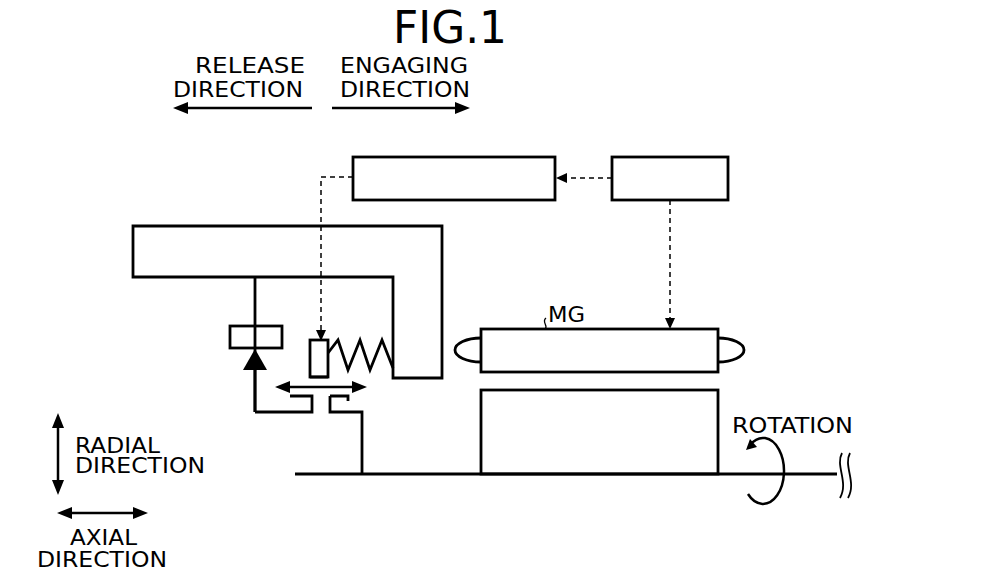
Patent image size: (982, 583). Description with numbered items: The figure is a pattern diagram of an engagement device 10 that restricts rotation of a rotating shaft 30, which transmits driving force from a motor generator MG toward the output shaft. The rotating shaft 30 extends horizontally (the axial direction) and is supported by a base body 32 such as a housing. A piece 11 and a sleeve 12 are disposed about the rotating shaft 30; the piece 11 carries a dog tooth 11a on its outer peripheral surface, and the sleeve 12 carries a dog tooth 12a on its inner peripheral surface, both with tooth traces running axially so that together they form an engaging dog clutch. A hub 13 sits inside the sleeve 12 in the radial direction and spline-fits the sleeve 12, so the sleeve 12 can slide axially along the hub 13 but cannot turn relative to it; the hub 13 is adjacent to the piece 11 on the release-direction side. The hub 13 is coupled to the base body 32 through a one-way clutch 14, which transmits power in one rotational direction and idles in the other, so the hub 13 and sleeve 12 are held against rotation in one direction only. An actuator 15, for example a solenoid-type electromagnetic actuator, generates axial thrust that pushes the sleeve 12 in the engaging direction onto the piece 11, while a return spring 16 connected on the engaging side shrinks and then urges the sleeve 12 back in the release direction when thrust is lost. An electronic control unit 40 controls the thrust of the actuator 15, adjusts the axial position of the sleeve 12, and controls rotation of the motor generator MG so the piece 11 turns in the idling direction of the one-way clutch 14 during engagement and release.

The engagement device 10 is at (106, 152).
The piece 11 is at (340, 412).
The dog tooth 11a is at (350, 400).
The sleeve 12 is at (335, 337).
The dog tooth 12a is at (315, 379).
The hub 13 is at (304, 412).
The one-way clutch 14 is at (230, 334).
The actuator 15 is at (498, 157).
The return spring 16 is at (369, 340).
The rotating shaft 30 is at (453, 476).
The base body 32 is at (198, 226).
The electronic control unit (ECU) 40 is at (673, 157).